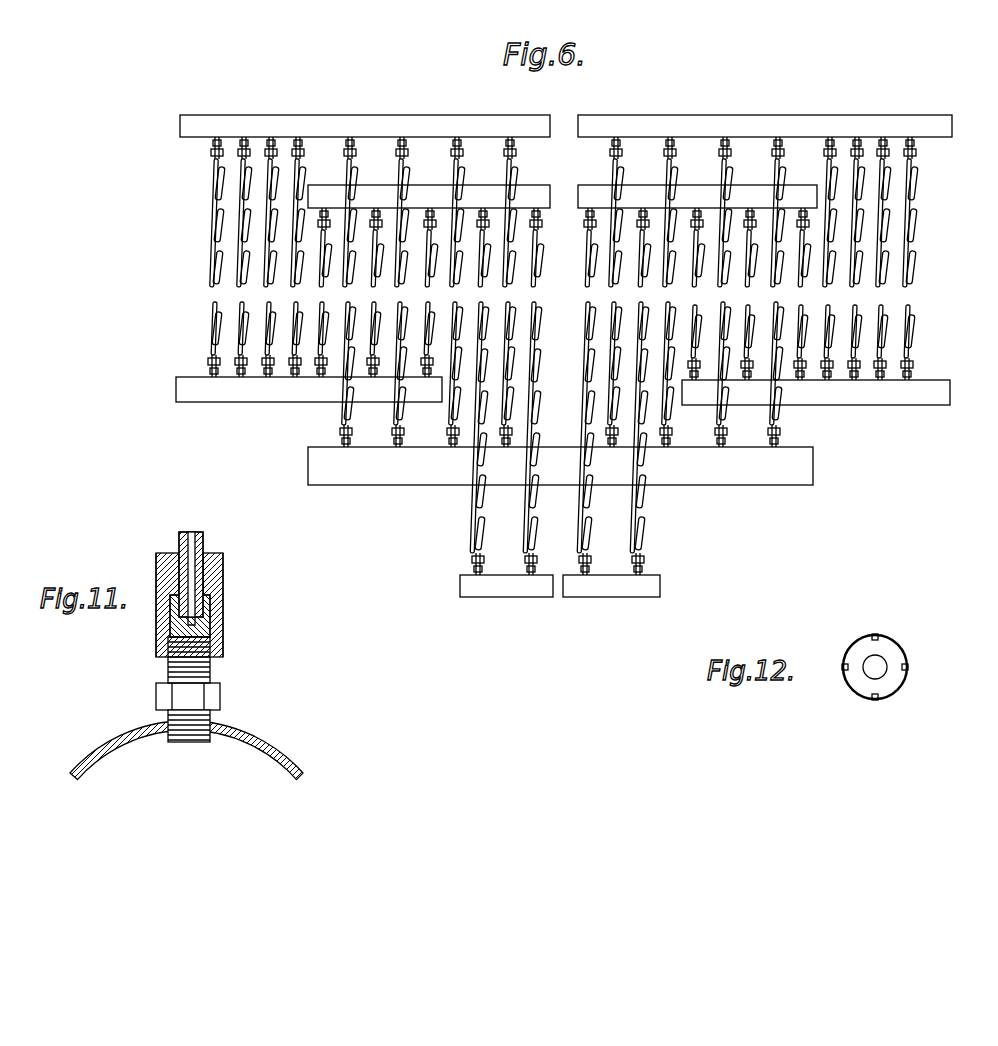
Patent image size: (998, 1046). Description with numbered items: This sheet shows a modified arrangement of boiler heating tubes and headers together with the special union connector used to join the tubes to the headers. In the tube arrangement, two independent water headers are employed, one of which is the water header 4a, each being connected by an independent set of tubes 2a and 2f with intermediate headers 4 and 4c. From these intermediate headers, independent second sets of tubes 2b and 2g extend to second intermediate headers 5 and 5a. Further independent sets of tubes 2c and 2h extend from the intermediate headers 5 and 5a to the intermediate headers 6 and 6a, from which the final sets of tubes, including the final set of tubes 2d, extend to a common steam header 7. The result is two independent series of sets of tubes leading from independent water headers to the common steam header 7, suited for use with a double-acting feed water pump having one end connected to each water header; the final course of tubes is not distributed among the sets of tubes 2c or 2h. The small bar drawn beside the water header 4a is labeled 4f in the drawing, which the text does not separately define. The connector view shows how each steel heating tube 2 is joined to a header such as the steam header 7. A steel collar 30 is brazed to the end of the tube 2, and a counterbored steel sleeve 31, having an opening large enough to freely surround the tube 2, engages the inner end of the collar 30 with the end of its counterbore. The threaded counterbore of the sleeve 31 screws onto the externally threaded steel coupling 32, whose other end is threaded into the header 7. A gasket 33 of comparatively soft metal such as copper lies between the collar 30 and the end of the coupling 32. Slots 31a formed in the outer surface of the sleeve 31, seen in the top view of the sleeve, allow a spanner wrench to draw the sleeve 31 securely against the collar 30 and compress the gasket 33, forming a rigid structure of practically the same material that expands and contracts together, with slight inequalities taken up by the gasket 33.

In FIG. 6, the intermediate header 6 is at (180, 125).
In FIG. 6, the intermediate header 6a is at (836, 130).
In FIG. 6, the intermediate header 4 is at (527, 200).
In FIG. 6, the intermediate header 4c is at (598, 193).
In FIG. 6, the second intermediate header 5 is at (186, 390).
In FIG. 6, the second intermediate header 5a is at (920, 395).
In FIG. 6, the common steam header 7 is at (329, 470).
In FIG. 11, the common steam header 7 is at (255, 735).
In FIG. 6, the water header 4a is at (462, 588).
In FIG. 6, the end bar 4f is at (621, 597).
In FIG. 6, the set of tubes 2a is at (532, 510).
In FIG. 6, the second set of tubes 2b is at (376, 340).
In FIG. 6, the set of tubes 2c is at (299, 311).
In FIG. 6, the final set of tubes 2d is at (447, 172).
In FIG. 6, the set of tubes 2f is at (589, 539).
In FIG. 6, the second set of tubes 2g is at (805, 352).
In FIG. 6, the set of tubes 2h is at (723, 172).
In FIG. 11, the heating tube 2 is at (206, 535).
In FIG. 11, the steel sleeve 31 is at (160, 560).
In FIG. 12, the steel sleeve 31 is at (900, 647).
In FIG. 11, the slots 31a is at (156, 571).
In FIG. 12, the slots 31a is at (844, 660).
In FIG. 11, the steel collar 30 is at (213, 623).
In FIG. 11, the gasket 33 is at (166, 640).
In FIG. 11, the steel coupling 32 is at (220, 692).